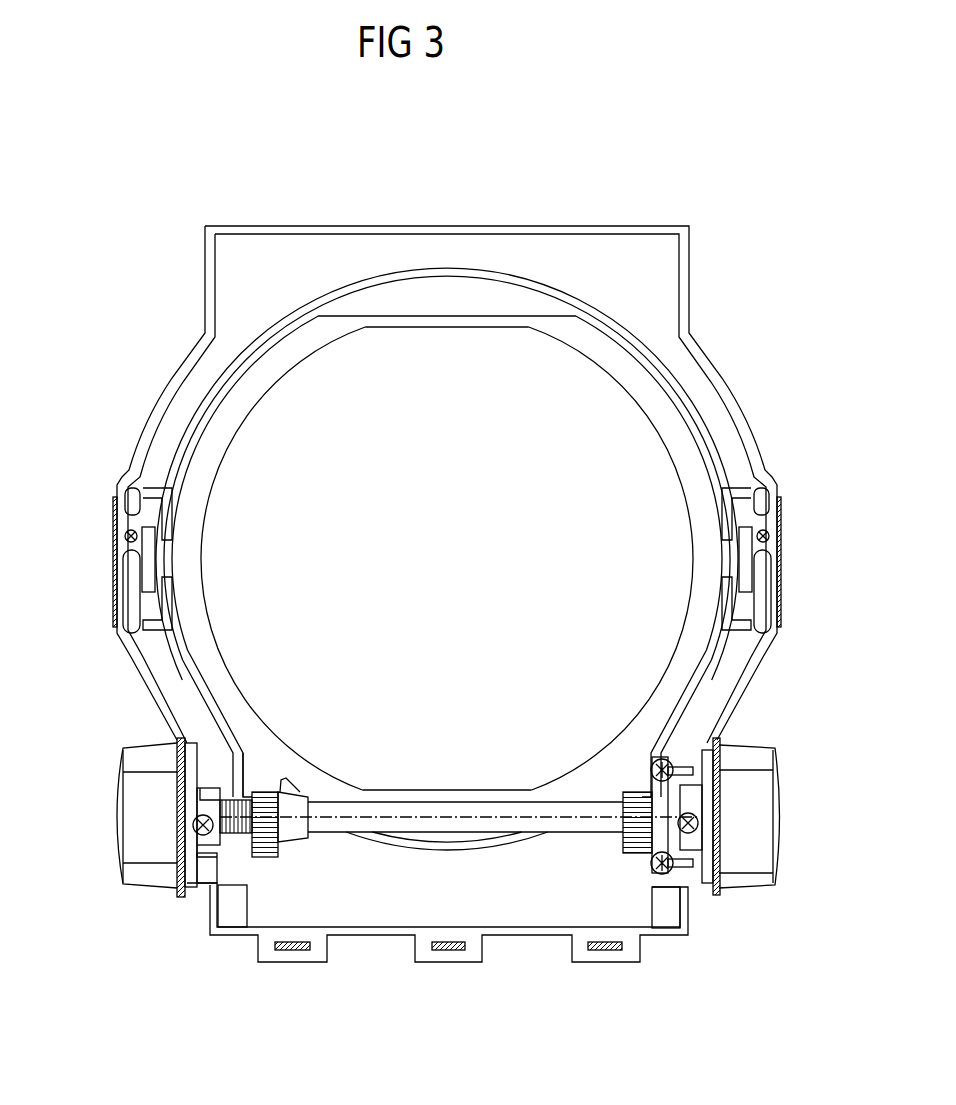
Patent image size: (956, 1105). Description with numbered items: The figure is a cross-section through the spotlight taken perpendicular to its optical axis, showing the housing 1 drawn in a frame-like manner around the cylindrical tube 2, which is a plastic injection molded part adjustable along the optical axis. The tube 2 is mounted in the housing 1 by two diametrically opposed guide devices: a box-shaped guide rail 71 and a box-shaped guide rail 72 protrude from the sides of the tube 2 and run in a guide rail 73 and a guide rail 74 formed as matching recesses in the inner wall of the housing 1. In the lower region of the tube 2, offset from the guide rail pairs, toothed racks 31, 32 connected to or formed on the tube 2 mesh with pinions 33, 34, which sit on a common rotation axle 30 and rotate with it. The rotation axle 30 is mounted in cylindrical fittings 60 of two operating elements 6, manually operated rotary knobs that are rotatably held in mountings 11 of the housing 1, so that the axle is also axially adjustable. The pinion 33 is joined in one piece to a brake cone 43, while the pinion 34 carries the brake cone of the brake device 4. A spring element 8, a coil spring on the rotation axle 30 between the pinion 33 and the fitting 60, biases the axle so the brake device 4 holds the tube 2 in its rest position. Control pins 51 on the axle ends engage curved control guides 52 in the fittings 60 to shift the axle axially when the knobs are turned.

The housing 1 is at (658, 262).
The cylindrical tube 2 is at (653, 395).
The brake device 4 is at (692, 918).
The operating element 6 is at (137, 857).
The spring element 8 is at (235, 837).
The mounting 11 is at (170, 768).
The rotation axle 30 is at (425, 817).
The toothed rack 31 is at (262, 770).
The toothed rack 32 is at (625, 773).
The pinion 33 is at (270, 857).
The pinion 34 is at (635, 855).
The brake cone 43 is at (298, 797).
The control pin 51 is at (173, 825).
The control guide 52 is at (178, 890).
The cylindrical fitting 60 is at (170, 790).
The box-shaped guide rail 71 is at (127, 530).
The box-shaped guide rail 72 is at (763, 513).
The guide rail 73 is at (130, 577).
The guide rail 74 is at (762, 568).